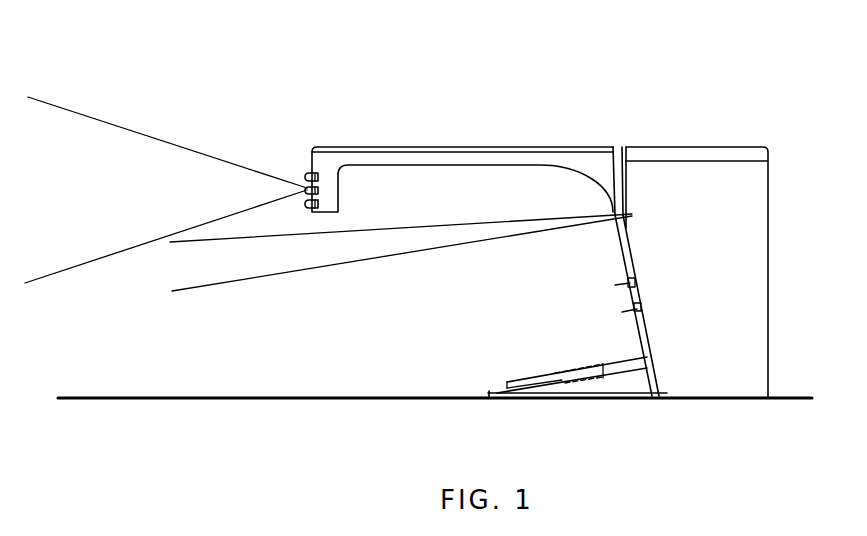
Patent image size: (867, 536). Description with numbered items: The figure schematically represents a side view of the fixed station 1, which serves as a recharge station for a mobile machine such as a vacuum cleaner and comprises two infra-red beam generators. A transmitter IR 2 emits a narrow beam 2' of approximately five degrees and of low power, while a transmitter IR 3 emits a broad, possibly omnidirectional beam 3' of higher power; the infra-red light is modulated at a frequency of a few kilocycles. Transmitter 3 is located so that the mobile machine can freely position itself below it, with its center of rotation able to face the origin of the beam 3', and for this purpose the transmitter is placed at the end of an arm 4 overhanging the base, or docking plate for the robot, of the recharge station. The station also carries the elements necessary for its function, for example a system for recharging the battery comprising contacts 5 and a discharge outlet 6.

The fixed station 1 is at (675, 114).
The infra-red transmitter 2 is at (724, 187).
The narrow beam 2' is at (399, 252).
The infra-red transmitter 3 is at (376, 138).
The broad beam 3' is at (166, 190).
The arm 4 is at (514, 159).
The contacts 5 is at (643, 290).
The discharge outlet 6 is at (597, 383).